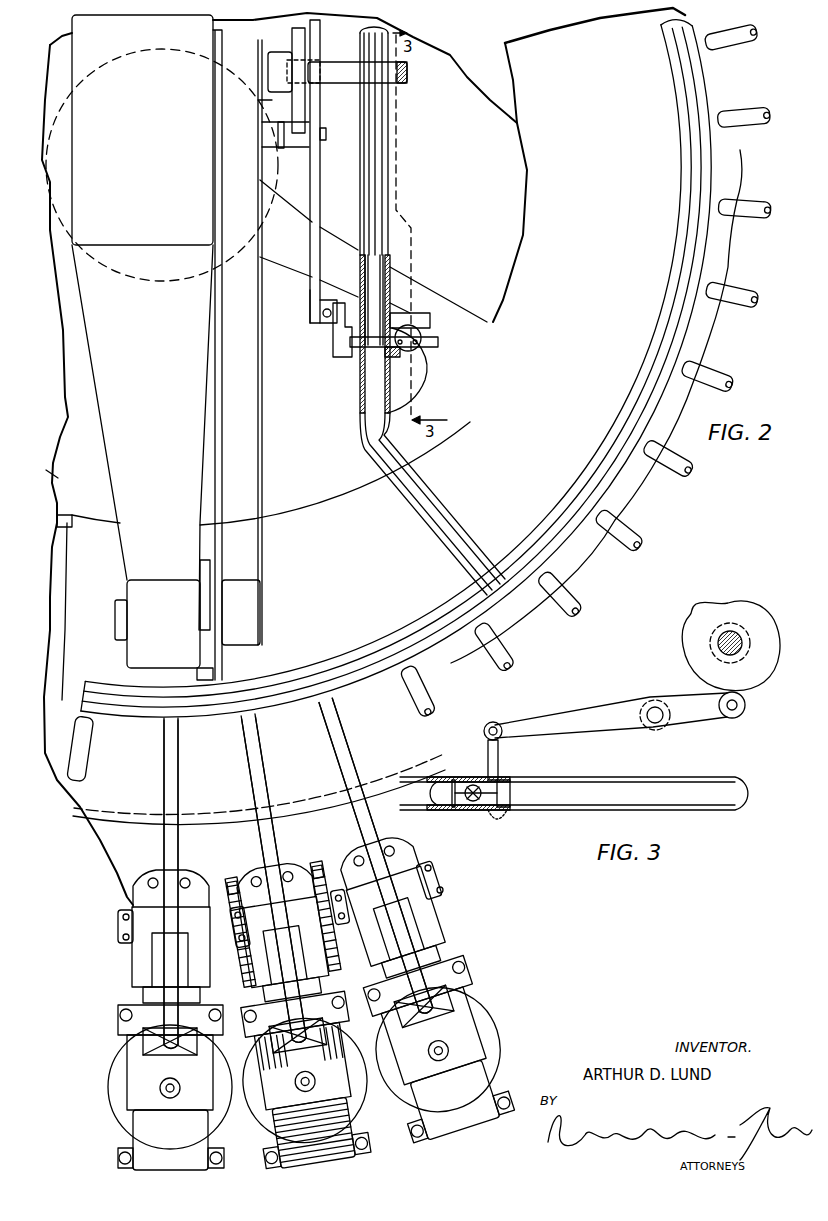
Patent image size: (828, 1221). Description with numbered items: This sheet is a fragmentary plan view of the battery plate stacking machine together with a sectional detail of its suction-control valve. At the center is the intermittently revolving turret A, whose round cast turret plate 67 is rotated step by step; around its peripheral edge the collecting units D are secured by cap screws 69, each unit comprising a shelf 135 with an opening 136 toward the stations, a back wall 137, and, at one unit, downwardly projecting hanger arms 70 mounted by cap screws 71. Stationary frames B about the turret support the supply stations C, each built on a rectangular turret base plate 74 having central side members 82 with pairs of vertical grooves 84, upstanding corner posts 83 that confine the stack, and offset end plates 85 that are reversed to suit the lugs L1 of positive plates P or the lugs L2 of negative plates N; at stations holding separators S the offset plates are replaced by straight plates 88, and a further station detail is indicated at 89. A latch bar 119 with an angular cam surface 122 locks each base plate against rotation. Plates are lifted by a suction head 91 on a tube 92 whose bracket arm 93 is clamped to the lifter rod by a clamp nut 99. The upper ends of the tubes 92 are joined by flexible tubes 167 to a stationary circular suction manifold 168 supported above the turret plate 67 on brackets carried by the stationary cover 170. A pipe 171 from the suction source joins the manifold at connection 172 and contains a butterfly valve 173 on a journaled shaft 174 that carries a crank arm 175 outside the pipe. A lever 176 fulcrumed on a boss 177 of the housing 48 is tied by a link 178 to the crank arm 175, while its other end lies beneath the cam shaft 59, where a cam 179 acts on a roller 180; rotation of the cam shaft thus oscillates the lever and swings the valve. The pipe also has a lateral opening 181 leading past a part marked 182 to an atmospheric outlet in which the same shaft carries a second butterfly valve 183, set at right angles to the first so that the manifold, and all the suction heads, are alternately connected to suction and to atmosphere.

In FIG. 2, the housing 48 is at (162, 148).
In FIG. 2, the cam shaft 59 is at (345, 62).
In FIG. 3, the cam shaft 59 is at (735, 620).
In FIG. 2, the turret plate 67 is at (60, 475).
In FIG. 2, the cap screws 69 is at (152, 880).
In FIG. 2, the hanger arms 70 is at (338, 887).
In FIG. 2, the cap screws 71 is at (234, 876).
In FIG. 2, the turret base plate 74 is at (352, 1126).
In FIG. 2, the side members 82 is at (122, 1088).
In FIG. 2, the corner posts 83 is at (124, 1163).
In FIG. 2, the vertical grooves 84 is at (340, 1065).
In FIG. 2, the end plates 85 is at (170, 945).
In FIG. 2, the straight plates 88 is at (275, 1080).
In FIG. 2, the clutch unit 89 is at (462, 1128).
In FIG. 2, the suction head 91 is at (145, 1040).
In FIG. 2, the tube 92 is at (414, 1046).
In FIG. 2, the bracket arm 93 is at (470, 1006).
In FIG. 2, the clamp nut 99 is at (172, 1095).
In FIG. 2, the latch bar 119 is at (470, 945).
In FIG. 2, the angular cam surface 122 is at (466, 939).
In FIG. 2, the shelf 135 is at (442, 866).
In FIG. 2, the opening 136 is at (447, 882).
In FIG. 2, the back wall 137 is at (118, 930).
In FIG. 2, the flexible tube 167 is at (735, 312).
In FIG. 2, the suction manifold 168 is at (604, 460).
In FIG. 2, the stationary cover 170 is at (570, 352).
In FIG. 2, the pipe 171 is at (390, 188).
In FIG. 3, the pipe 171 is at (745, 793).
In FIG. 2, the connection 172 is at (495, 572).
In FIG. 2, the butterfly valve 173 is at (360, 375).
In FIG. 3, the butterfly valve 173 is at (462, 777).
In FIG. 2, the shaft 174 is at (440, 343).
In FIG. 3, the shaft 174 is at (460, 805).
In FIG. 2, the crank arm 175 is at (333, 342).
In FIG. 3, the crank arm 175 is at (498, 822).
In FIG. 2, the lever 176 is at (320, 192).
In FIG. 3, the lever 176 is at (570, 715).
In FIG. 2, the boss 177 is at (325, 133).
In FIG. 3, the boss 177 is at (656, 706).
In FIG. 2, the link 178 is at (280, 150).
In FIG. 3, the link 178 is at (500, 758).
In FIG. 2, the cam 179 is at (291, 42).
In FIG. 3, the cam 179 is at (680, 640).
In FIG. 2, the roller 180 is at (300, 60).
In FIG. 3, the roller 180 is at (735, 720).
In FIG. 2, the lateral opening 181 is at (412, 398).
In FIG. 2, the collar 182 is at (425, 315).
In FIG. 3, the collar 182 is at (510, 788).
In FIG. 2, the butterfly valve 183 is at (421, 334).
In FIG. 3, the butterfly valve 183 is at (483, 797).
In FIG. 2, the turret A is at (470, 77).
In FIG. 2, the stationary frames B is at (135, 997).
In FIG. 2, the supply stations C is at (476, 991).
In FIG. 2, the collecting units D is at (130, 962).
In FIG. 2, the negative plates N is at (127, 1026).
In FIG. 2, the positive plates P is at (461, 971).
In FIG. 2, the separators S is at (270, 1024).
In FIG. 2, the negative plate lugs L2 is at (130, 1070).
In FIG. 2, the positive plate lugs L1 is at (476, 1016).